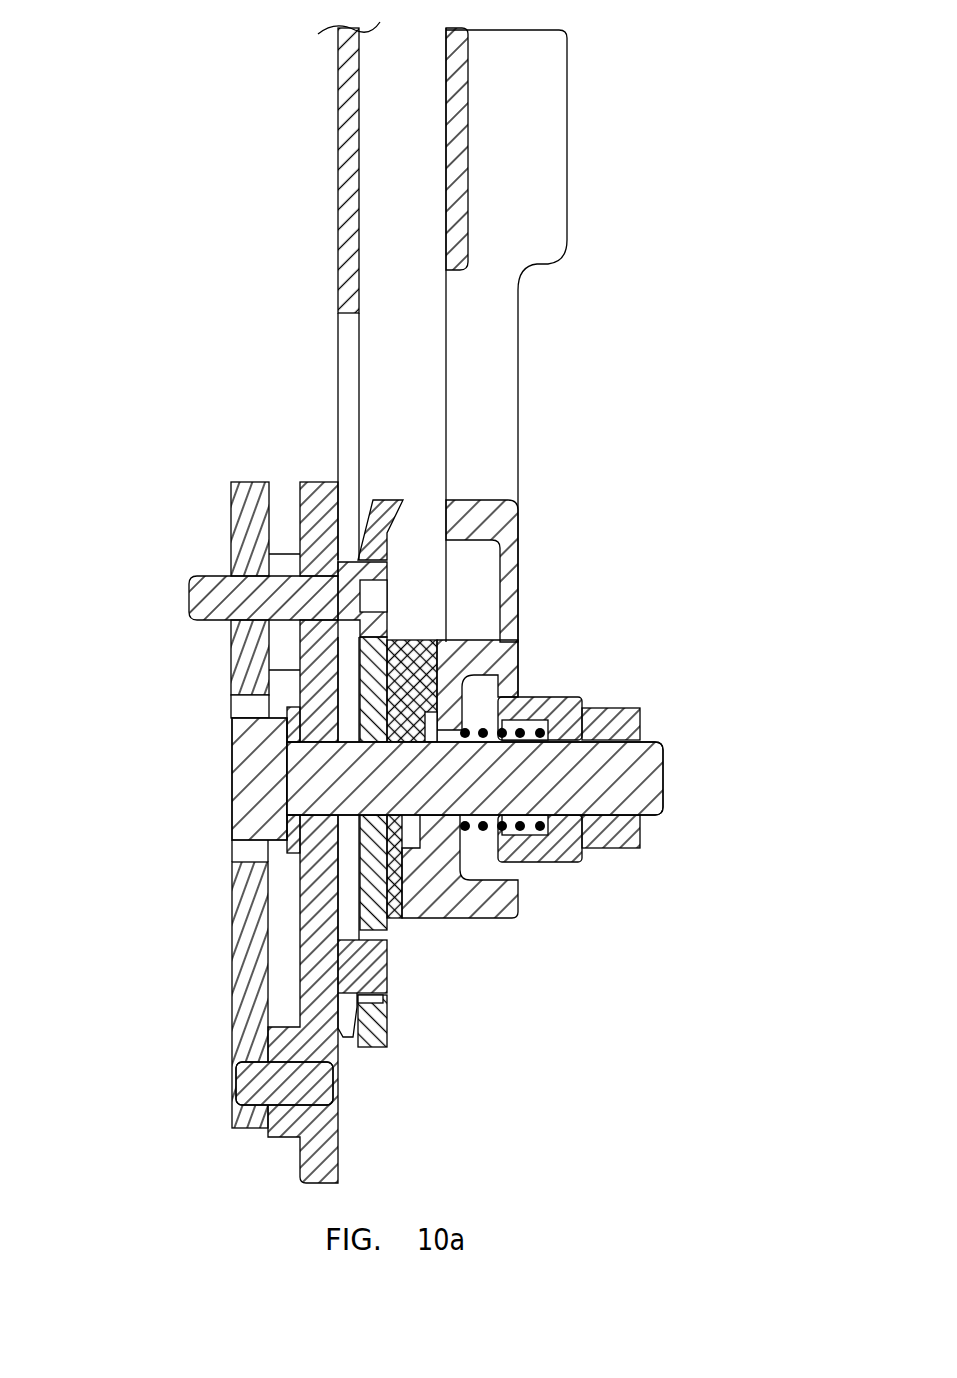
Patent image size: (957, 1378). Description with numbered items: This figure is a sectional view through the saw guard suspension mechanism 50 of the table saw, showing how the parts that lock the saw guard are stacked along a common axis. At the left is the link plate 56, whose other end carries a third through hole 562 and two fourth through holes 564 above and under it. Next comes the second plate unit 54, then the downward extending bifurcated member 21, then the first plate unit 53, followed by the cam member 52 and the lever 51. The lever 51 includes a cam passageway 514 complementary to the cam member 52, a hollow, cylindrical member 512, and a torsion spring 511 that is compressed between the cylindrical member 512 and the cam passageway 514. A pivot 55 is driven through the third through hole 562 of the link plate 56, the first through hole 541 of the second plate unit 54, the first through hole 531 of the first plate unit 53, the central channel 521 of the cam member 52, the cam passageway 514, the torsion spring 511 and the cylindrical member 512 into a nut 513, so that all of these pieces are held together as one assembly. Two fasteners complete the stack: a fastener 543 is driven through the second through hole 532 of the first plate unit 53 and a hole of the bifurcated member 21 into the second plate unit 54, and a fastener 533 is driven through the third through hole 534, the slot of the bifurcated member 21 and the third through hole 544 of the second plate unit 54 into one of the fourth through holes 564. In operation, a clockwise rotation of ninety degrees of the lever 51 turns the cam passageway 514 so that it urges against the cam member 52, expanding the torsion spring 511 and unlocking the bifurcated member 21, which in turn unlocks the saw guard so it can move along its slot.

The bifurcated member 21 is at (338, 231).
The saw guard suspension mechanism 50 is at (690, 338).
The lever 51 is at (538, 146).
The torsion spring 511 is at (475, 855).
The hollow, cylindrical member 512 is at (557, 710).
The nut 513 is at (618, 728).
The cam passageway 514 is at (517, 883).
The cam member 52 is at (410, 660).
The central channel 521 is at (455, 690).
The first plate unit 53 is at (368, 888).
The first through hole 531 is at (362, 705).
The second through hole 532 is at (377, 998).
The fastener 533 is at (223, 607).
The third through hole 534 is at (362, 560).
The second plate unit 54 is at (322, 1132).
The first through hole 541 is at (293, 840).
The fastener 543 is at (363, 973).
The third through hole 544 is at (320, 560).
The pivot 55 is at (300, 795).
The link plate 56 is at (235, 905).
The third through hole 562 is at (250, 708).
The fourth through holes 564 is at (252, 575).